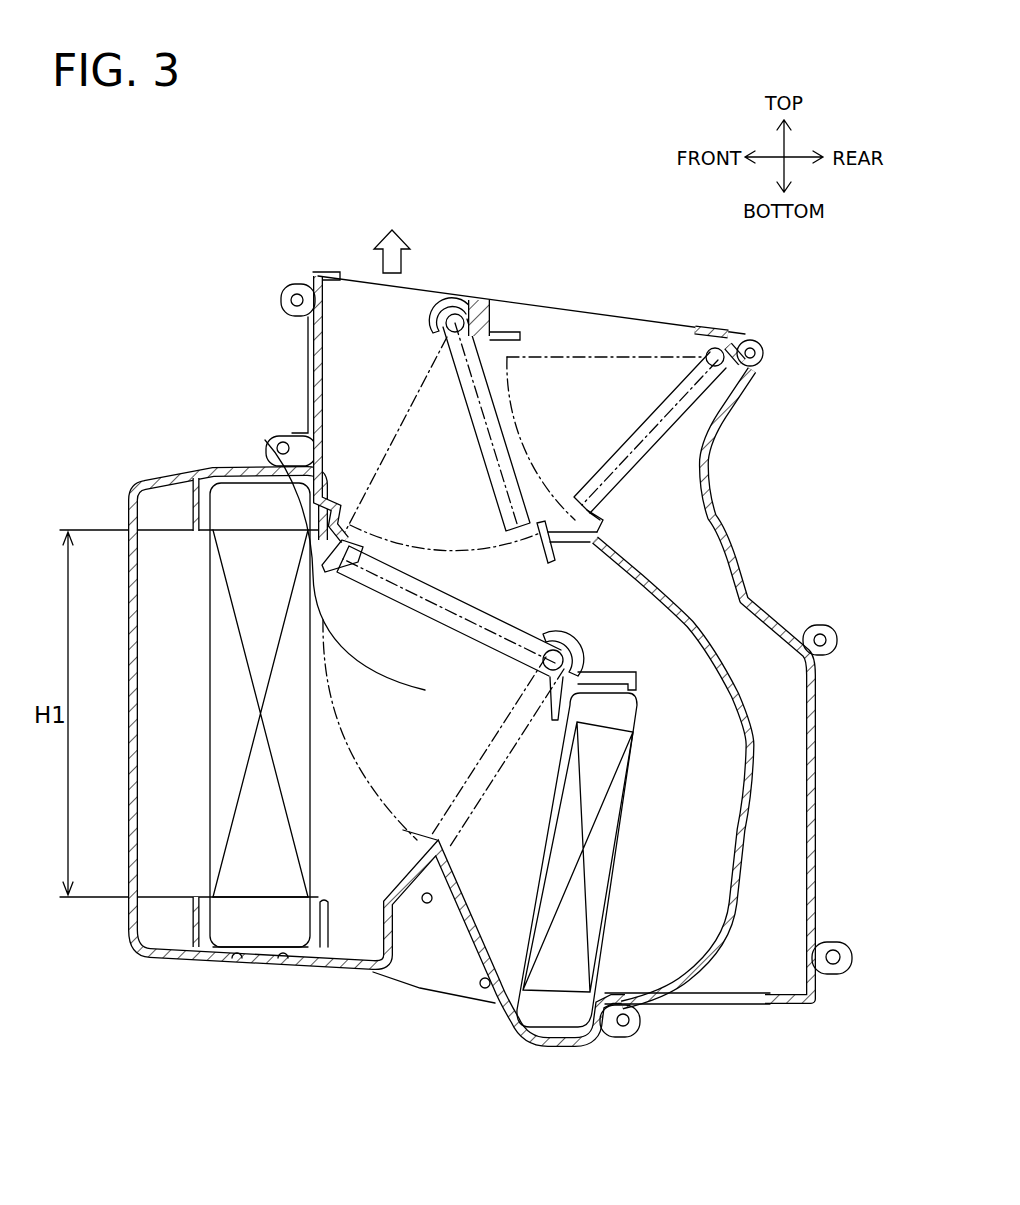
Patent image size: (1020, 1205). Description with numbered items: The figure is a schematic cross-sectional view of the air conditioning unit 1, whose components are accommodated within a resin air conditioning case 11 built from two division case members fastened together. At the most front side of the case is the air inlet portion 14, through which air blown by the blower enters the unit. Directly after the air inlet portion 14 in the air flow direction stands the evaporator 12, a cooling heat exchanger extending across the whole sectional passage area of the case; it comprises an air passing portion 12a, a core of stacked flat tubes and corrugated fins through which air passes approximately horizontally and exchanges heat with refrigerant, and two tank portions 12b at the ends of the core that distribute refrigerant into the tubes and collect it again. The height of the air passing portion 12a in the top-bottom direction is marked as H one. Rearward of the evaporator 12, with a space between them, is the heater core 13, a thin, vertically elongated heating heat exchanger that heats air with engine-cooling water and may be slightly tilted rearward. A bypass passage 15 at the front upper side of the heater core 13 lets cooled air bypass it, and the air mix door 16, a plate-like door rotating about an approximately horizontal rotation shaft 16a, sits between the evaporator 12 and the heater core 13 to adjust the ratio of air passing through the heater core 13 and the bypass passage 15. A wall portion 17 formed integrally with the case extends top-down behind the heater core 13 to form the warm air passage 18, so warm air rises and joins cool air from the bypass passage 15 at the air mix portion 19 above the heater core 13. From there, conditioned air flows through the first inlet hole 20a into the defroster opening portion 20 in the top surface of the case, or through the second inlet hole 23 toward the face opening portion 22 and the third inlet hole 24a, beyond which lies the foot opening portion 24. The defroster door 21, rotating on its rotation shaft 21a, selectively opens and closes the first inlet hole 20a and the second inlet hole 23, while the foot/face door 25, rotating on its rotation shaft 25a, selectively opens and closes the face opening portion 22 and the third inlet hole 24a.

The air conditioning unit 1 is at (192, 342).
The air conditioning case 11 is at (133, 669).
The evaporator 12 is at (253, 553).
The air passing portion 12a is at (250, 873).
The tank portions 12b is at (253, 925).
The heater core 13 is at (640, 713).
The air inlet portion 14 is at (170, 779).
The bypass passage 15 is at (298, 458).
The air mix door 16 is at (487, 618).
The rotation shaft 16a is at (575, 648).
The wall portion 17 is at (758, 822).
The warm air passage 18 is at (683, 777).
The air mix portion 19 is at (483, 570).
The defroster opening portion 20 is at (378, 295).
The first inlet hole 20a is at (371, 399).
The defroster door 21 is at (483, 376).
The rotation shaft 21a is at (452, 294).
The face opening portion 22 is at (601, 320).
The second inlet hole 23 is at (540, 433).
The foot opening portion 24 is at (725, 1003).
The third inlet hole 24a is at (668, 467).
The foot/face door 25 is at (666, 400).
The rotation shaft 25a is at (733, 338).